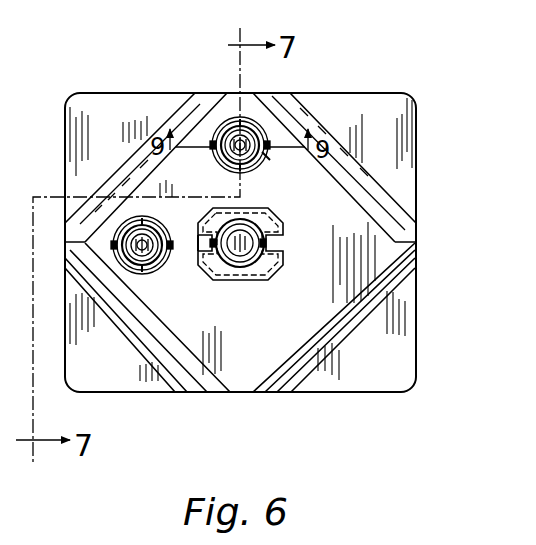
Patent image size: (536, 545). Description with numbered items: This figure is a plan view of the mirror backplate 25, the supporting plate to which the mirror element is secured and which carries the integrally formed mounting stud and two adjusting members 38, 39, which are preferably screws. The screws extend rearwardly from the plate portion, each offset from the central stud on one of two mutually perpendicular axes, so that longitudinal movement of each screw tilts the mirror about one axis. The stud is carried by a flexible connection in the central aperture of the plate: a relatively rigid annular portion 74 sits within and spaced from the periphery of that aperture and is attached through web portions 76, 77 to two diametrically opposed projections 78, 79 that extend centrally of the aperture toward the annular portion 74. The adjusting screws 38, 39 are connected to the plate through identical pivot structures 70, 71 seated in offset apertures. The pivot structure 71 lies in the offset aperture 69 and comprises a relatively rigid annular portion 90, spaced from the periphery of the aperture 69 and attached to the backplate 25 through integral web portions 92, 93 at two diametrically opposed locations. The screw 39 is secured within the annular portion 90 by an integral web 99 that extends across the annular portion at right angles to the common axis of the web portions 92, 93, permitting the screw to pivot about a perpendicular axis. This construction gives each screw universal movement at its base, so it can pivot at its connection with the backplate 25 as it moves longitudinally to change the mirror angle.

The backplate 25 is at (359, 92).
The adjusting member 38 is at (144, 255).
The adjusting member 39 is at (256, 135).
The offset aperture 69 is at (218, 128).
The pivot structure 70 is at (122, 232).
The pivot structure 71 is at (236, 128).
The annular portion 74 is at (256, 259).
The web portion 76 is at (212, 221).
The web portion 77 is at (270, 212).
The projection 78 is at (203, 243).
The projection 79 is at (279, 253).
The annular portion 90 is at (262, 134).
The web portion 92 is at (221, 157).
The web portion 93 is at (270, 160).
The web 99 is at (234, 168).